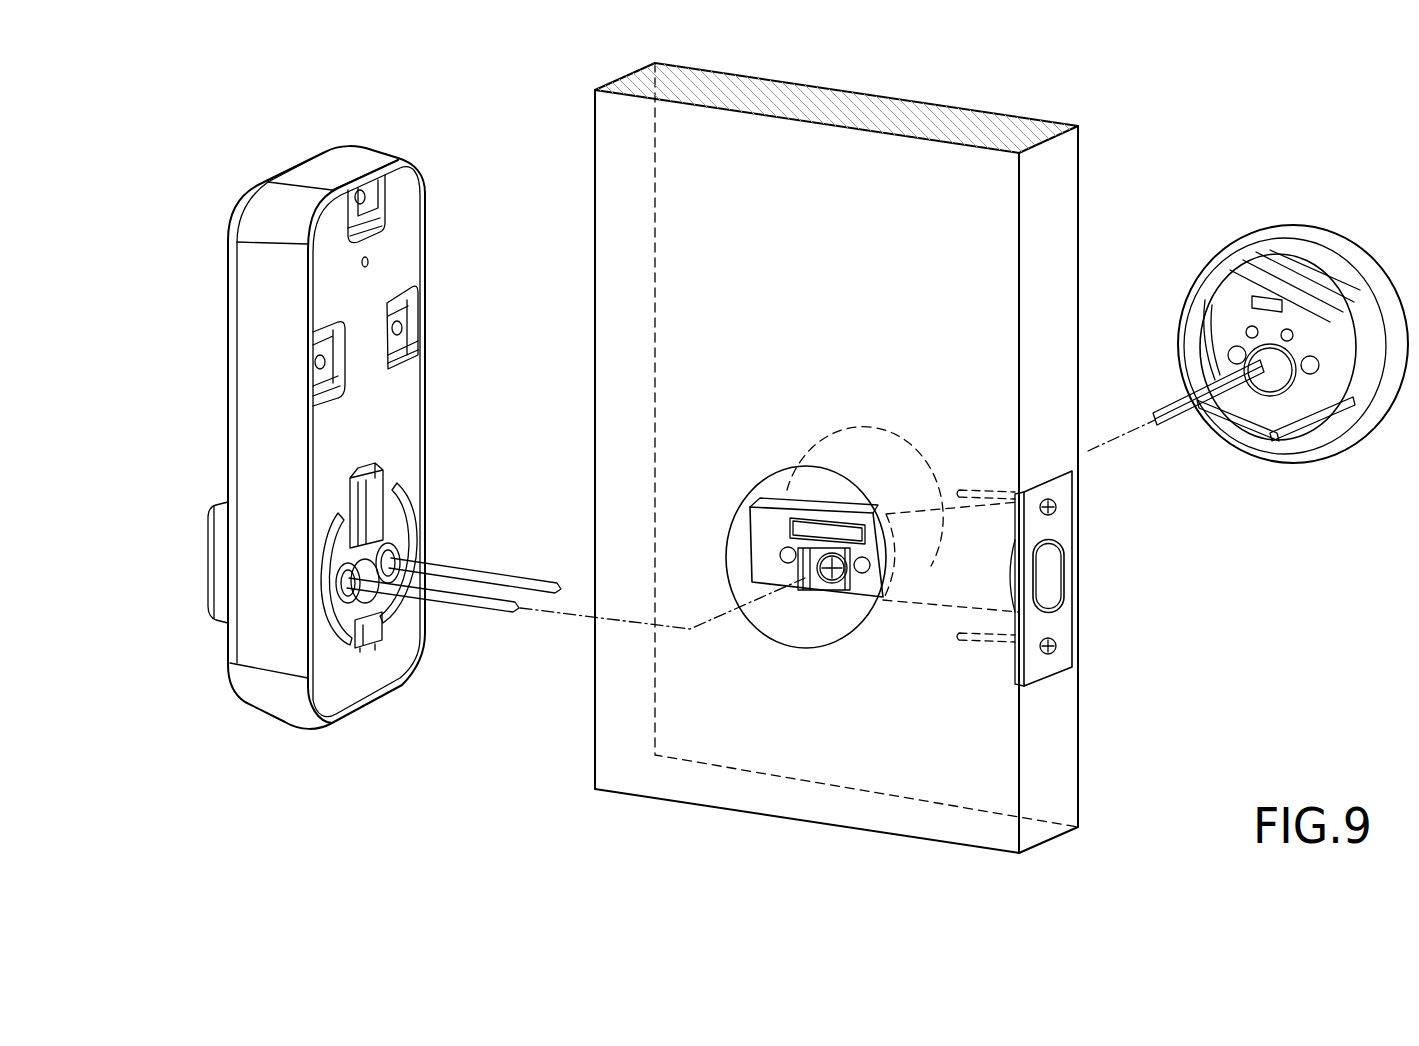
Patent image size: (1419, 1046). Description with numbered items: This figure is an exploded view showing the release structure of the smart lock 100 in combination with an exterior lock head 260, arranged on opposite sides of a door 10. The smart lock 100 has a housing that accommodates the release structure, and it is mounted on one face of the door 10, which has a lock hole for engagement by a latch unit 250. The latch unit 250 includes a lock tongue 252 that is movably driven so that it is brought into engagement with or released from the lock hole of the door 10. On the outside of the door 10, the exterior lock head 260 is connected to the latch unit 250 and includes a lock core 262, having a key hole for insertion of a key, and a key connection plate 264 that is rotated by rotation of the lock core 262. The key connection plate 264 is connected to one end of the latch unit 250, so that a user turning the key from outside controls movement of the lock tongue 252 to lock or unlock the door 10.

The smart lock 100 is at (233, 197).
The door 10 is at (1067, 183).
The latch unit 250 is at (873, 557).
The lock tongue 252 is at (1035, 568).
The exterior lock head 260 is at (1248, 283).
The lock core 262 is at (1230, 335).
The key connection plate 264 is at (1170, 405).